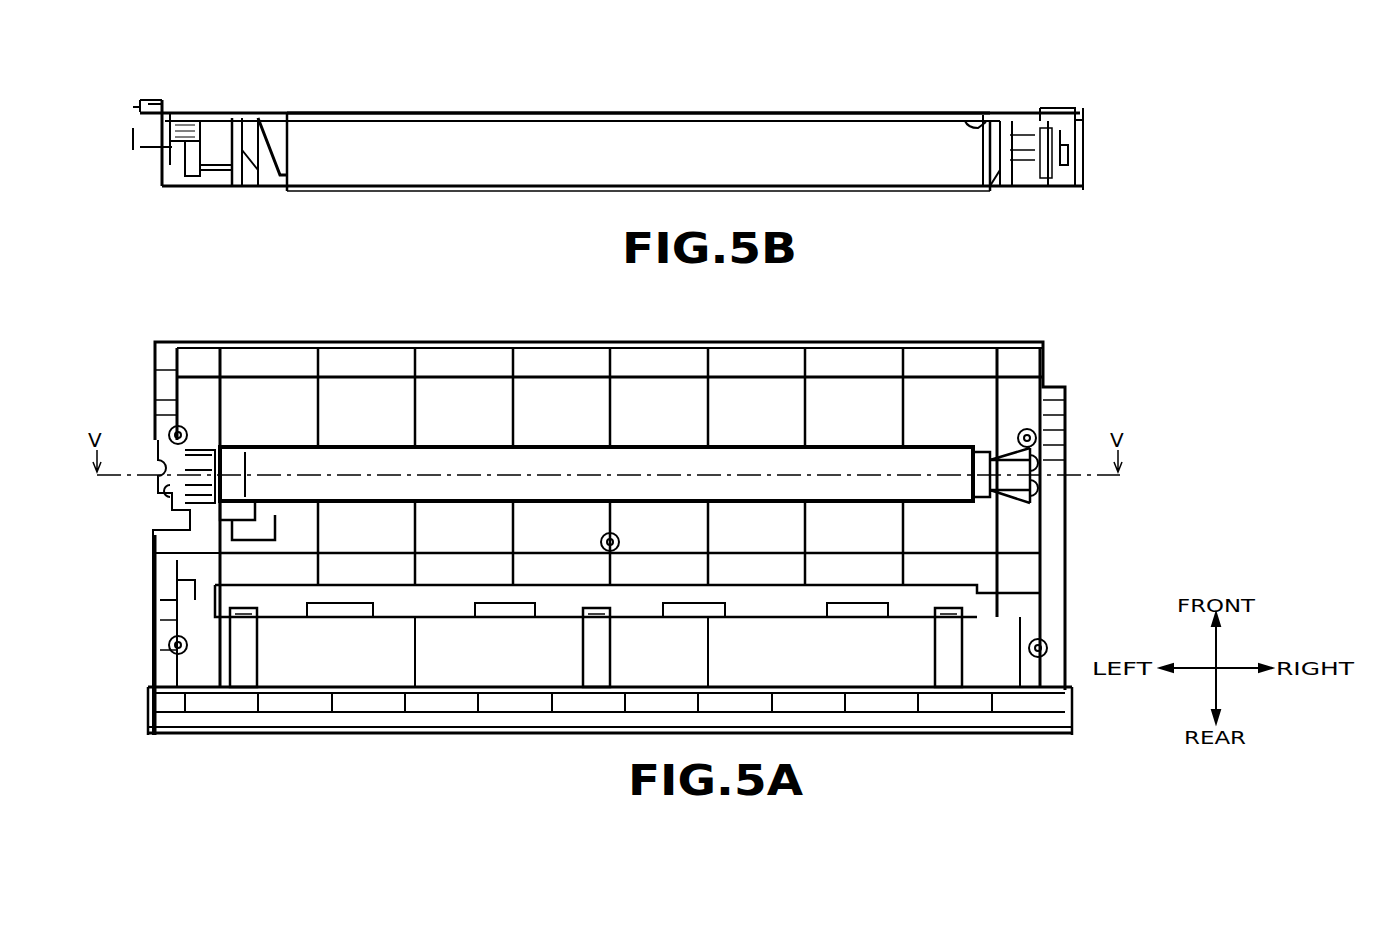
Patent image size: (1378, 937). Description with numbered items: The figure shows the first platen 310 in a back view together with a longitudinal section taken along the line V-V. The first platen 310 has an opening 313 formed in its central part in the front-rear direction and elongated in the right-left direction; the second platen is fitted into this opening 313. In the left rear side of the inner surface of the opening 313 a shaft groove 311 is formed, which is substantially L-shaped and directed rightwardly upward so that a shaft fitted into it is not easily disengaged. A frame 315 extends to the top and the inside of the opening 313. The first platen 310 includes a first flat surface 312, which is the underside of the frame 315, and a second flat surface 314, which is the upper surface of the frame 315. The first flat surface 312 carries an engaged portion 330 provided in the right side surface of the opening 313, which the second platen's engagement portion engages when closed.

In FIG. 5B, the first platen 310 is at (1052, 108).
In FIG. 5A, the first platen 310 is at (1035, 360).
In FIG. 5B, the shaft groove 311 is at (262, 125).
In FIG. 5A, the shaft groove 311 is at (247, 500).
In FIG. 5B, the first flat surface 312 is at (965, 121).
In FIG. 5A, the opening 313 is at (398, 452).
In FIG. 5B, the second flat surface 314 is at (470, 113).
In FIG. 5B, the frame 315 is at (992, 116).
In FIG. 5B, the engaged portion 330 is at (990, 186).